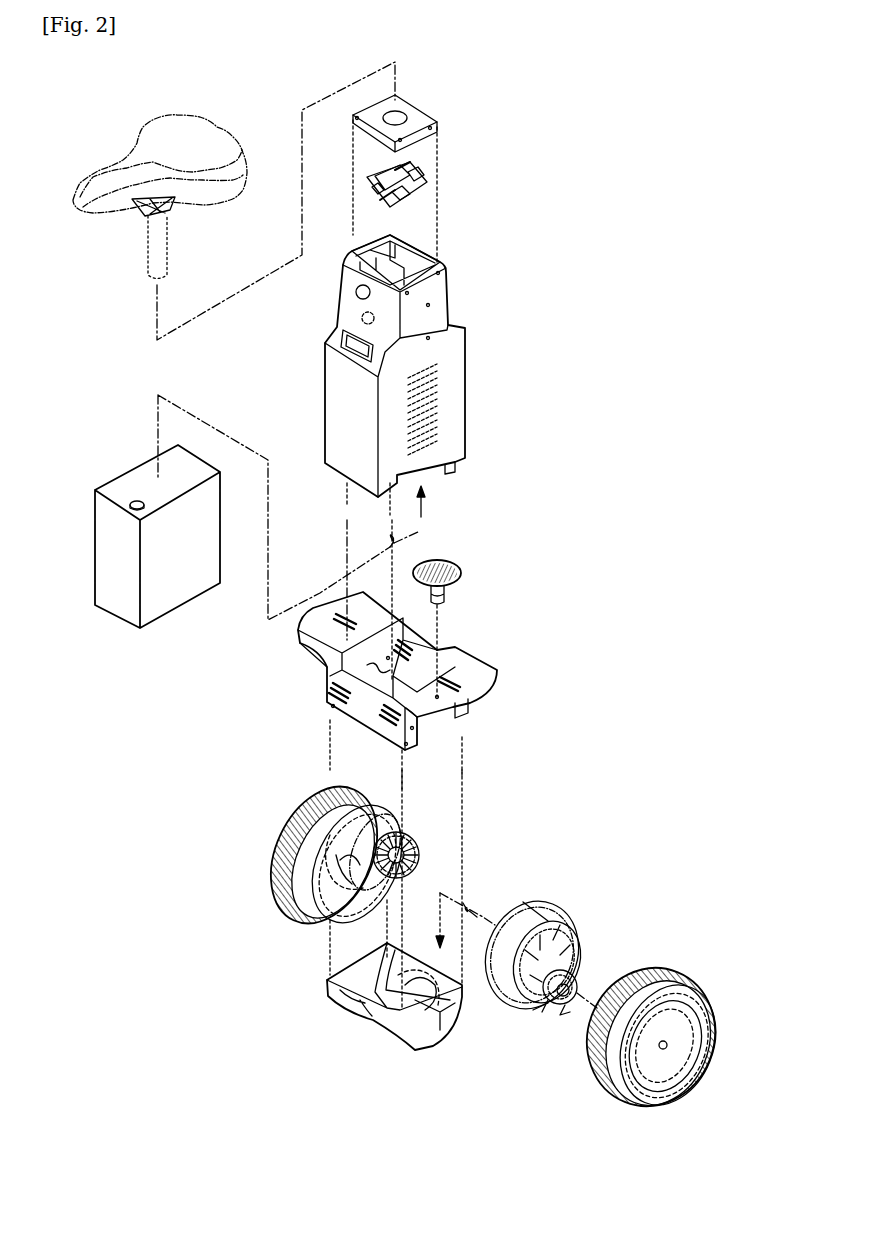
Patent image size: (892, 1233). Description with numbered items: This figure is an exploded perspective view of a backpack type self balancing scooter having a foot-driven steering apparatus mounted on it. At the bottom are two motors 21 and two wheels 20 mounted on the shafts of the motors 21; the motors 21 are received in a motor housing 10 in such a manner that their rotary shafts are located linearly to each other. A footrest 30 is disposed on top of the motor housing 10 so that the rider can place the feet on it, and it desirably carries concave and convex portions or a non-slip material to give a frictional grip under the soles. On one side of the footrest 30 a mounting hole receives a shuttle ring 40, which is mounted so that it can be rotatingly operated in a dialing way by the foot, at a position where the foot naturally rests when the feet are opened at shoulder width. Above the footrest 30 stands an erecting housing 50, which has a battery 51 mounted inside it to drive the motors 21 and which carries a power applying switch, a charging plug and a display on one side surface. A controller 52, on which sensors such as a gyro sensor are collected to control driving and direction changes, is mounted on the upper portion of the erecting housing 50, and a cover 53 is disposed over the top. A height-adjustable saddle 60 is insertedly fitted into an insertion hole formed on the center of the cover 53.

The motor housing 10 is at (443, 1028).
The wheel 20 is at (273, 858).
The motor 21 is at (419, 850).
The footrest 30 is at (472, 662).
The shuttle ring 40 is at (463, 573).
The erecting housing 50 is at (460, 382).
The battery 51 is at (114, 482).
The controller 52 is at (428, 180).
The cover 53 is at (420, 115).
The saddle 60 is at (175, 118).